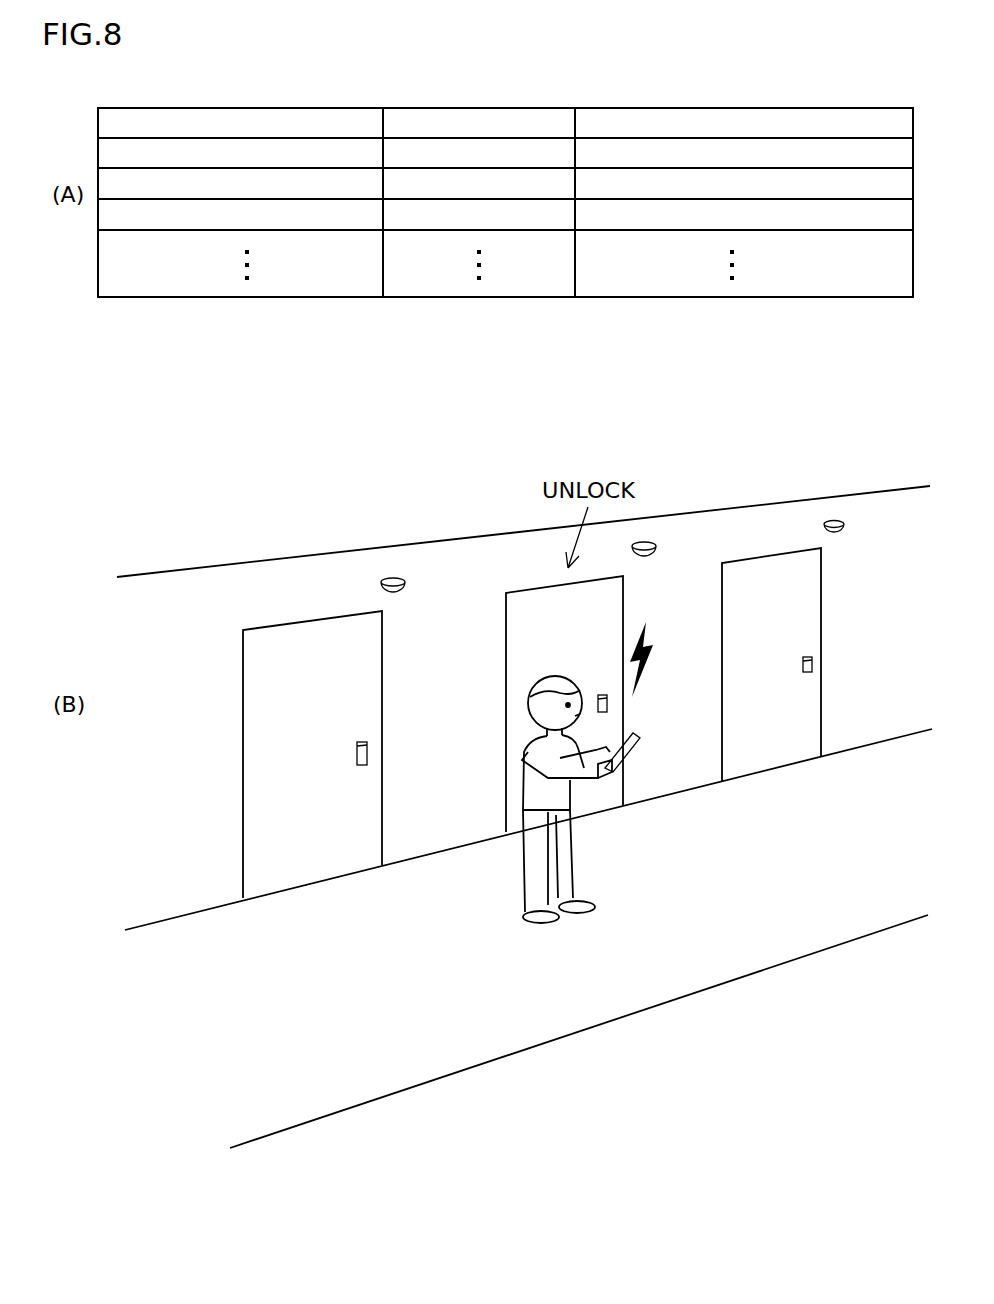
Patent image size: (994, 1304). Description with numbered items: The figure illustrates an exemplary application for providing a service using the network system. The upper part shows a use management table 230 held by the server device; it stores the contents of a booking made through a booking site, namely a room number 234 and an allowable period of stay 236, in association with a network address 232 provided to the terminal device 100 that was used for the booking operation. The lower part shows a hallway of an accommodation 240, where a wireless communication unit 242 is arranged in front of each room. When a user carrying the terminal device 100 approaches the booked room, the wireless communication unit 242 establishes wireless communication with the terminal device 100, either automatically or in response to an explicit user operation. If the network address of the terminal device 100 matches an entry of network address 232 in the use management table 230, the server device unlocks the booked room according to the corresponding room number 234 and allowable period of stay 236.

The use management table 230 is at (846, 62).
The network address 232 is at (252, 298).
The room number 234 is at (479, 298).
The allowable period of stay 236 is at (731, 298).
The accommodation 240 is at (864, 509).
The wireless communication unit 242 is at (648, 541).
The terminal device 100 is at (641, 752).